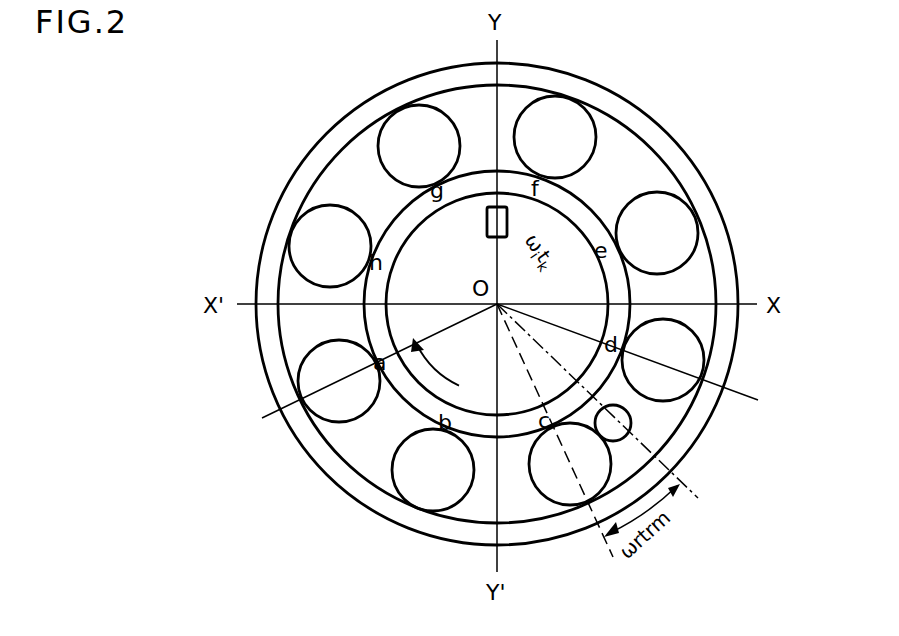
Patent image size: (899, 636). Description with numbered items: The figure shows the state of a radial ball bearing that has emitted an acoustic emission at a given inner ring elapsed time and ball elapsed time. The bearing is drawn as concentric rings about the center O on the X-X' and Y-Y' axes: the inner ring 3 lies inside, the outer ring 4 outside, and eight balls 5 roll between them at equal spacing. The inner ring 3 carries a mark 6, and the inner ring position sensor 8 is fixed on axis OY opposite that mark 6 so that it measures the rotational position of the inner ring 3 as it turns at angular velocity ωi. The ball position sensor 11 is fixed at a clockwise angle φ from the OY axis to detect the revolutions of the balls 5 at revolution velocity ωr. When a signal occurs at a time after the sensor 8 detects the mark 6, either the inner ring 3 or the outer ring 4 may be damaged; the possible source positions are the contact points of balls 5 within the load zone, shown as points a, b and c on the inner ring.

The inner ring 3 is at (623, 288).
The outer ring 4 is at (293, 182).
The balls 5 is at (572, 118).
The mark 6 is at (397, 387).
The inner ring position sensor 8 is at (484, 207).
The ball position sensor 11 is at (631, 417).